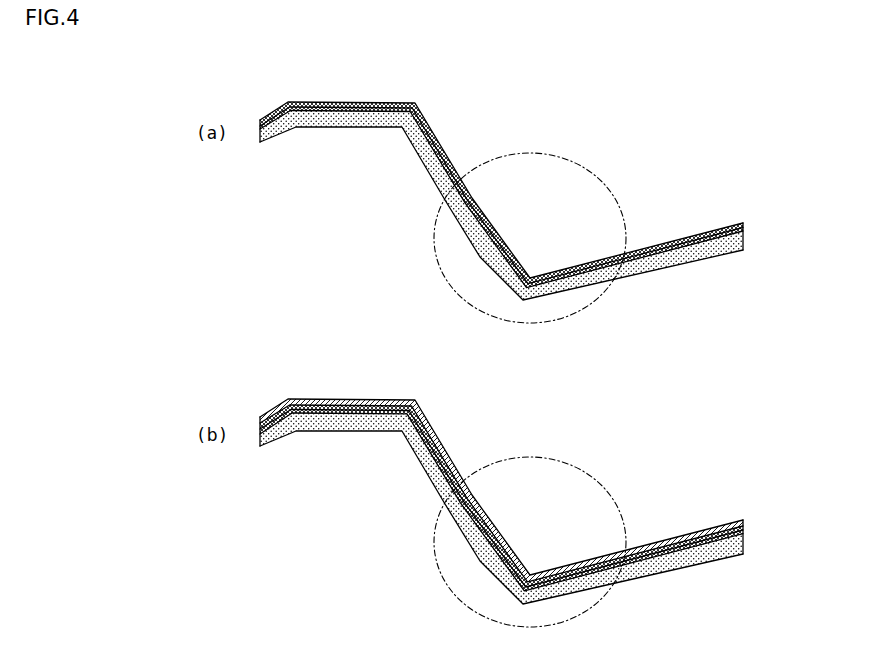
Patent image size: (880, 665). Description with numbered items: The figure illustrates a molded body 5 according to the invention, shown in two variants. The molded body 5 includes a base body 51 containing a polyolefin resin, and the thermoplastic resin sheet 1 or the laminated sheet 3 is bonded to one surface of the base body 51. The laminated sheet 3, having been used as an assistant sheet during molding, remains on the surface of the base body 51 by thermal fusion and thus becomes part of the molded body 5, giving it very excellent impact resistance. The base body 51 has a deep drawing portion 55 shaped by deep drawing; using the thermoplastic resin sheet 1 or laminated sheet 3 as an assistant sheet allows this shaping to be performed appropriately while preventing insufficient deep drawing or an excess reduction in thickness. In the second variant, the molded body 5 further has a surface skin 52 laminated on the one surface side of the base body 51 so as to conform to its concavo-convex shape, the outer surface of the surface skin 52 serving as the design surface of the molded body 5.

The thermoplastic resin sheet 1 is at (501, 322).
The laminated sheet 3 is at (395, 404).
The molded body 5 is at (501, 329).
The base body 51 is at (384, 128).
The surface skin 52 is at (352, 400).
The deep drawing portion 55 is at (533, 153).